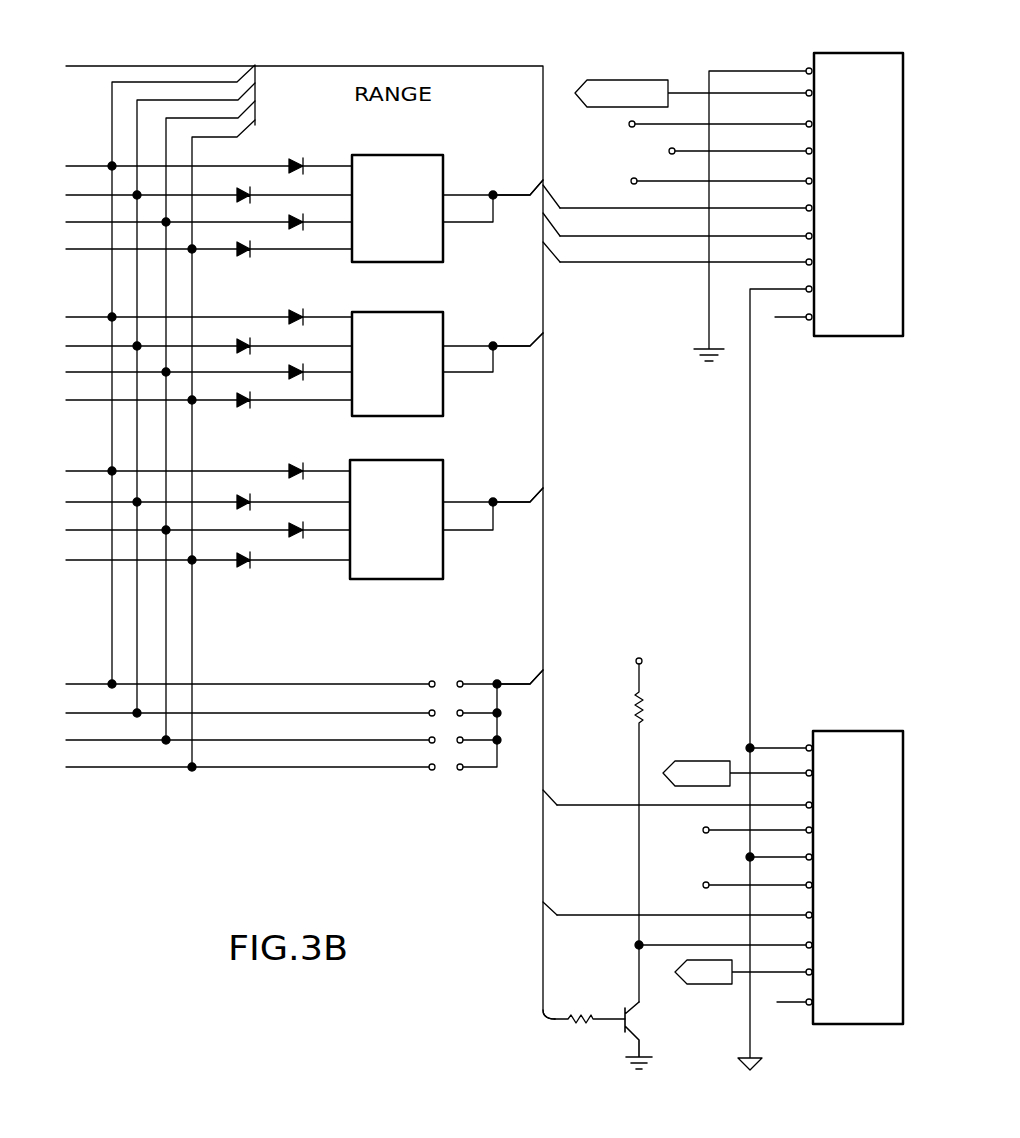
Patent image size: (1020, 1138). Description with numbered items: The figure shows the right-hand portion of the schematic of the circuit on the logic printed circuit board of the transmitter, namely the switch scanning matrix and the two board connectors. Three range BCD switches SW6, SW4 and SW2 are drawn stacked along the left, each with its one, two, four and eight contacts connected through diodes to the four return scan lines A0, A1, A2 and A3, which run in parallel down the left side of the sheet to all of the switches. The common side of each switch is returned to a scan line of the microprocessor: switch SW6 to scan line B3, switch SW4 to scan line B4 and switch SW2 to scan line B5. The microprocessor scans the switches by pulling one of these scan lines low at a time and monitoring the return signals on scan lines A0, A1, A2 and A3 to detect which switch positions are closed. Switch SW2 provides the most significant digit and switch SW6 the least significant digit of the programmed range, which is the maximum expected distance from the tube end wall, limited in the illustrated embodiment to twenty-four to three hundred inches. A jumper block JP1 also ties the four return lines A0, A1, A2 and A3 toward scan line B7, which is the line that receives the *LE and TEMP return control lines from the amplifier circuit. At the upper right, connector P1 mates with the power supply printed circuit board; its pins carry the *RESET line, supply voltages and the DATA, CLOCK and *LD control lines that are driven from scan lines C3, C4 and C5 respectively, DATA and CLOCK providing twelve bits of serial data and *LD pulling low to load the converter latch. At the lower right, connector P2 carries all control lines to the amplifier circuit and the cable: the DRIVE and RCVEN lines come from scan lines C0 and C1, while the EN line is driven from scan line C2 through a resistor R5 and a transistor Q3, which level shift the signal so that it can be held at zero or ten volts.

The scan line A0 is at (197, 376).
The scan line A1 is at (209, 399).
The scan line A2 is at (224, 421).
The scan line A3 is at (237, 444).
The range BCD switch SW6 is at (304, 207).
The range BCD switch SW4 is at (304, 362).
The range BCD switch SW2 is at (304, 521).
The jumper block JP1 is at (304, 728).
The scan line B3 is at (518, 182).
The scan line B4 is at (518, 334).
The scan line B5 is at (518, 489).
The scan line B7 is at (520, 671).
The scan line C0 is at (557, 788).
The scan line C1 is at (557, 894).
The scan line C2 is at (554, 1004).
The scan line C3 is at (563, 196).
The scan line C4 is at (563, 224).
The scan line C5 is at (563, 252).
The connector P1 is at (731, 548).
The connector P2 is at (730, 880).
The resistor R5 is at (625, 854).
The transistor Q3 is at (626, 1024).